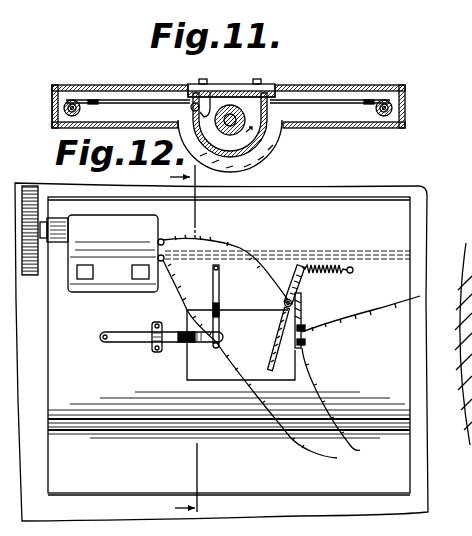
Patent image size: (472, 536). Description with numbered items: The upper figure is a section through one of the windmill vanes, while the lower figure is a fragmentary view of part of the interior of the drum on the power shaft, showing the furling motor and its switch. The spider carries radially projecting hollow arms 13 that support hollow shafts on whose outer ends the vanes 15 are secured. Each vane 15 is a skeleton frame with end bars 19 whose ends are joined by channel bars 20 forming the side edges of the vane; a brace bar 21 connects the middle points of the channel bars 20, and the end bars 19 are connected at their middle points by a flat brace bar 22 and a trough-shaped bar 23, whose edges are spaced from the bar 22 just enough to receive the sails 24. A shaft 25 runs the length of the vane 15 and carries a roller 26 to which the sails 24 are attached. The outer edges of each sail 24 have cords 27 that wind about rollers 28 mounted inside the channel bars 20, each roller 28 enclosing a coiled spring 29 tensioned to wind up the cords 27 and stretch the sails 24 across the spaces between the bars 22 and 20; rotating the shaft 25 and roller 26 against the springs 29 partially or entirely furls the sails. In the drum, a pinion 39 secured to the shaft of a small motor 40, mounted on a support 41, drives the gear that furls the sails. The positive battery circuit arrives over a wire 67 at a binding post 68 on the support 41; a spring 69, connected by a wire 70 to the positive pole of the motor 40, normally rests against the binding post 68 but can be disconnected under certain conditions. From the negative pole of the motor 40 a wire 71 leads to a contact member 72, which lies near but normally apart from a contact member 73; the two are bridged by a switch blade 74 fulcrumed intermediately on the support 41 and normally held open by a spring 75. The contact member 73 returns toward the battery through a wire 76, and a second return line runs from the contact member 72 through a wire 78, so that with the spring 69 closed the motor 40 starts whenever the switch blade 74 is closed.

In FIG. 12, the hollow arm 13 is at (171, 341).
In FIG. 11, the vane 15 is at (50, 87).
In FIG. 11, the end bar 19 is at (346, 118).
In FIG. 11, the channel bar 20 is at (54, 105).
In FIG. 11, the brace bar 21 is at (257, 167).
In FIG. 11, the flat brace bar 22 is at (229, 84).
In FIG. 11, the trough-shaped bar 23 is at (268, 140).
In FIG. 11, the sail 24 is at (150, 100).
In FIG. 11, the shaft 25 is at (232, 116).
In FIG. 11, the roller 26 is at (250, 116).
In FIG. 11, the cord 27 is at (92, 100).
In FIG. 11, the roller 28 is at (72, 100).
In FIG. 11, the coiled spring 29 is at (76, 100).
In FIG. 12, the pinion 39 is at (32, 178).
In FIG. 12, the motor 40 is at (78, 216).
In FIG. 12, the support 41 is at (353, 205).
In FIG. 12, the wire 67 is at (301, 444).
In FIG. 12, the binding post 68 is at (215, 349).
In FIG. 12, the spring 69 is at (200, 342).
In FIG. 12, the wire 70 is at (178, 293).
In FIG. 12, the wire 71 is at (245, 247).
In FIG. 12, the contact member 72 is at (306, 306).
In FIG. 12, the contact member 73 is at (306, 341).
In FIG. 12, the switch blade 74 is at (276, 350).
In FIG. 12, the spring 75 is at (327, 266).
In FIG. 12, the wire 76 is at (358, 449).
In FIG. 12, the wire 78 is at (385, 307).